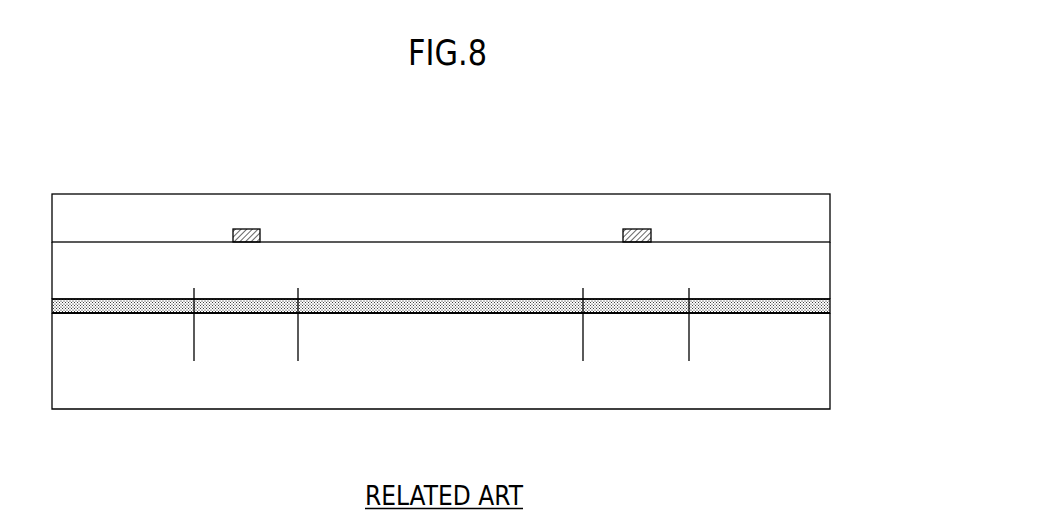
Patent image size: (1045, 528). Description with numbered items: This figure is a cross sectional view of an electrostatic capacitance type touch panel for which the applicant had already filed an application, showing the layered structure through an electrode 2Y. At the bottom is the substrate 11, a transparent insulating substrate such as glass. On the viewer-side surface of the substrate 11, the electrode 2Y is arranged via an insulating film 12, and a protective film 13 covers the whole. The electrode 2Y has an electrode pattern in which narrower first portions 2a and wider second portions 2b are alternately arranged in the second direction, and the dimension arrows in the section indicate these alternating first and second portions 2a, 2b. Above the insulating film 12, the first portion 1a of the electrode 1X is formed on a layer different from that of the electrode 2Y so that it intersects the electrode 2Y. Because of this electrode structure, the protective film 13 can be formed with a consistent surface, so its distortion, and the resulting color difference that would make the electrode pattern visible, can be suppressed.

The protective film 13 is at (817, 205).
The insulating film 12 is at (817, 263).
The electrode 2Y is at (792, 300).
The substrate 11 is at (727, 383).
The electrode 1X is at (492, 179).
The first portion 1a is at (247, 226).
The first portion 2a is at (298, 348).
The second portion 2b is at (194, 348).